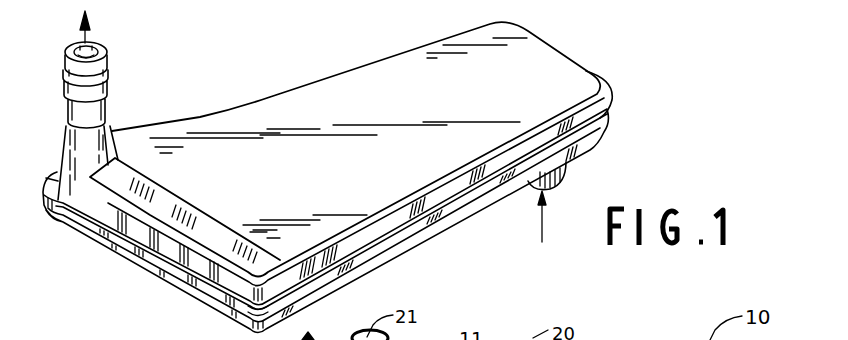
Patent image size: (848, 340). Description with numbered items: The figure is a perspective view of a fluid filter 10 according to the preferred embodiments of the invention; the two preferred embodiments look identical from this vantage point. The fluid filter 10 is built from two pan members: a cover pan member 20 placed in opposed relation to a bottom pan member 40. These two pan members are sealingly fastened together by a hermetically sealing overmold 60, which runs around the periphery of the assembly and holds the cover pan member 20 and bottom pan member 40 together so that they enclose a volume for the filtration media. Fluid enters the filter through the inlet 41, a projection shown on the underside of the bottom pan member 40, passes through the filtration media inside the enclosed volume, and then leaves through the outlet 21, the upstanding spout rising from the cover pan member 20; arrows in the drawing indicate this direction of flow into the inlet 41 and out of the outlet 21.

The fluid filter 10 is at (275, 90).
The cover pan member 20 is at (557, 67).
The outlet 21 is at (101, 47).
The bottom pan member 40 is at (140, 266).
The inlet 41 is at (565, 170).
The overmold 60 is at (613, 107).